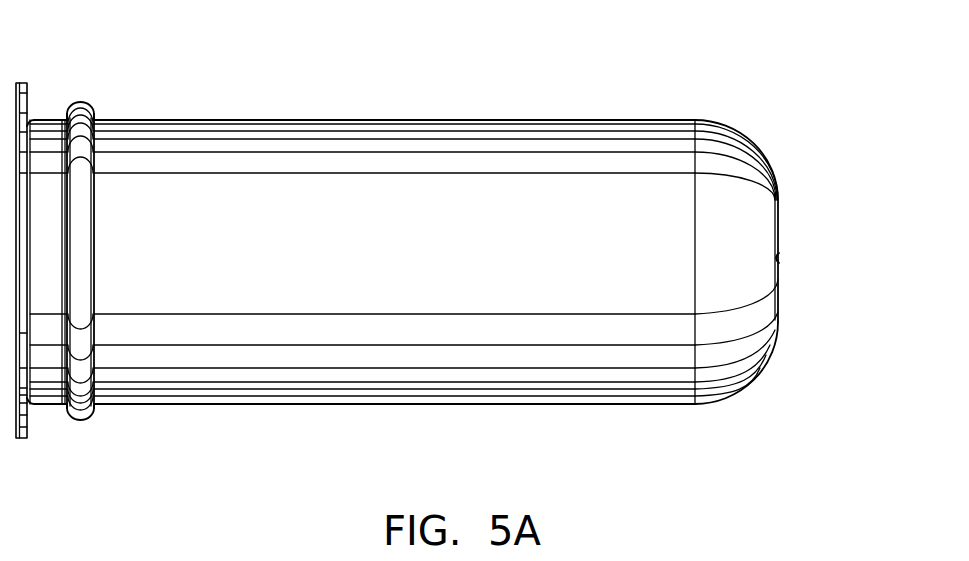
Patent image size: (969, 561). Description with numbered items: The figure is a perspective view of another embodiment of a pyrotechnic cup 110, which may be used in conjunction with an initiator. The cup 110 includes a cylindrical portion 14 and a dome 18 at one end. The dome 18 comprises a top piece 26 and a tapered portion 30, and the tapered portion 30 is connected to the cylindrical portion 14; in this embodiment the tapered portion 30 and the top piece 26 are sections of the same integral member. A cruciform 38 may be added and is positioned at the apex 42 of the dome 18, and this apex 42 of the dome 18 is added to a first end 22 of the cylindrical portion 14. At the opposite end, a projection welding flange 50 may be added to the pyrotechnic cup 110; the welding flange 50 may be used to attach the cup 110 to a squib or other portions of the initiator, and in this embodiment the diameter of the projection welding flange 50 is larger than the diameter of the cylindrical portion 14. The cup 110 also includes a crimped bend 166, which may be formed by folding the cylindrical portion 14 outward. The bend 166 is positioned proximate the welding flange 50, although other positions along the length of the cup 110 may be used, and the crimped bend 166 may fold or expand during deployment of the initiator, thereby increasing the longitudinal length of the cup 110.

The cylindrical portion 14 is at (382, 118).
The dome 18 is at (717, 150).
The first end 22 is at (758, 143).
The top piece 26 is at (778, 330).
The tapered portion 30 is at (702, 117).
The cruciform 38 is at (770, 182).
The apex 42 is at (792, 257).
The projection welding flange 50 is at (28, 87).
The pyrotechnic cup 110 is at (318, 412).
The crimped bend 166 is at (100, 107).